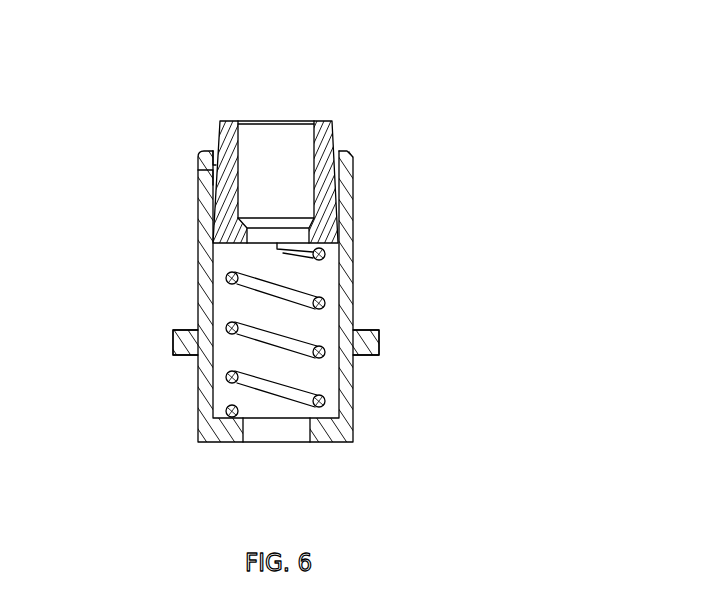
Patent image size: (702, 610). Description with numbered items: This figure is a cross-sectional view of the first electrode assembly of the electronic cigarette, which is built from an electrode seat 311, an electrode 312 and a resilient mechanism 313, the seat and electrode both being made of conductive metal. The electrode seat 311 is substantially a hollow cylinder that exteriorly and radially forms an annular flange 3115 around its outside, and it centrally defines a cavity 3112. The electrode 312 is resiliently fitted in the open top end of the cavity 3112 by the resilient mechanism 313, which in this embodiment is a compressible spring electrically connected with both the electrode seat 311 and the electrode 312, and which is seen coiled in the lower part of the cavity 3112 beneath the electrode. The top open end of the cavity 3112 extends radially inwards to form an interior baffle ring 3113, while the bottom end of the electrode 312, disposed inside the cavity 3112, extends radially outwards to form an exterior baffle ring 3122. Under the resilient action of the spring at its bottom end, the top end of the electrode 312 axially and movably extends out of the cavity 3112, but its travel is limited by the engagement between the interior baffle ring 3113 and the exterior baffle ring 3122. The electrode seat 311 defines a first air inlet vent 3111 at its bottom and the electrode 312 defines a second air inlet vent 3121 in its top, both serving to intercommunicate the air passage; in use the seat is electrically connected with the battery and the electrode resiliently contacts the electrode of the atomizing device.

The electrode seat 311 is at (345, 372).
The first air inlet vent 3111 is at (282, 430).
The cavity 3112 is at (228, 300).
The interior baffle ring 3113 is at (214, 168).
The annular flange 3115 is at (379, 348).
The electrode 312 is at (333, 140).
The second air inlet vent 3121 is at (287, 147).
The exterior baffle ring 3122 is at (212, 179).
The resilient mechanism 313 is at (298, 297).